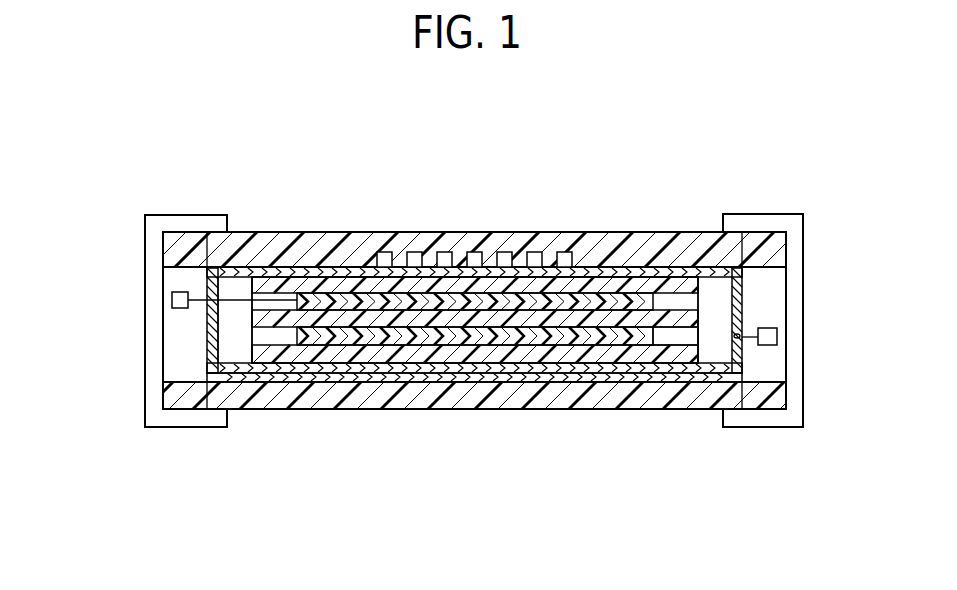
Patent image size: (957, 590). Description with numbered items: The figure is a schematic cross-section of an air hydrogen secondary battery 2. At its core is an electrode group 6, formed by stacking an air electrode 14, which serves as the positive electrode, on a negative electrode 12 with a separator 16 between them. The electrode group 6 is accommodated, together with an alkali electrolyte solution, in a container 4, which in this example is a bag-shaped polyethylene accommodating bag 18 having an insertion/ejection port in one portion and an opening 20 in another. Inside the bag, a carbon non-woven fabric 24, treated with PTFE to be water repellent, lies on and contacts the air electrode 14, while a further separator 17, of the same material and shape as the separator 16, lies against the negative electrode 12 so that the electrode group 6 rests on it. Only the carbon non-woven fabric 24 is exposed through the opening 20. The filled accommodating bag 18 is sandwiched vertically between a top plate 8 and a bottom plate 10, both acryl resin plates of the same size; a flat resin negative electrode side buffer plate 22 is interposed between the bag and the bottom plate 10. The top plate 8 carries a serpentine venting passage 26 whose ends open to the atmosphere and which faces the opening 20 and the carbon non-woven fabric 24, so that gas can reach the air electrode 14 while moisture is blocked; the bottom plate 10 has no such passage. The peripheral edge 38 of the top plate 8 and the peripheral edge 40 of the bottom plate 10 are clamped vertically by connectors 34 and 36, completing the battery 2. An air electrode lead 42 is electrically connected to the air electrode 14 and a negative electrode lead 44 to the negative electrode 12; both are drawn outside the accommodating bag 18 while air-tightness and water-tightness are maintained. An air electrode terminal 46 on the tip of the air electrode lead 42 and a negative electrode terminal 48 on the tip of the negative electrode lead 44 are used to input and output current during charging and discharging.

The battery 2 is at (706, 183).
The container 4 is at (402, 320).
The accommodating bag 18 is at (207, 355).
The electrode group 6 is at (475, 345).
The top plate 8 is at (660, 232).
The bottom plate 10 is at (356, 400).
The negative electrode 12 is at (525, 350).
The air electrode 14 is at (623, 302).
The separator 16 is at (590, 320).
The separator 17 is at (676, 398).
The opening 20 is at (350, 272).
The negative electrode side buffer plate 22 is at (431, 378).
The carbon non-woven fabric 24 is at (598, 287).
The venting passage 26 is at (418, 262).
The connector 34 is at (760, 214).
The connector 36 is at (182, 215).
The peripheral edge 38 is at (168, 249).
The peripheral edge 40 is at (168, 386).
The air electrode lead 42 is at (207, 323).
The negative electrode lead 44 is at (716, 338).
The air electrode terminal 46 is at (180, 292).
The negative electrode terminal 48 is at (770, 328).